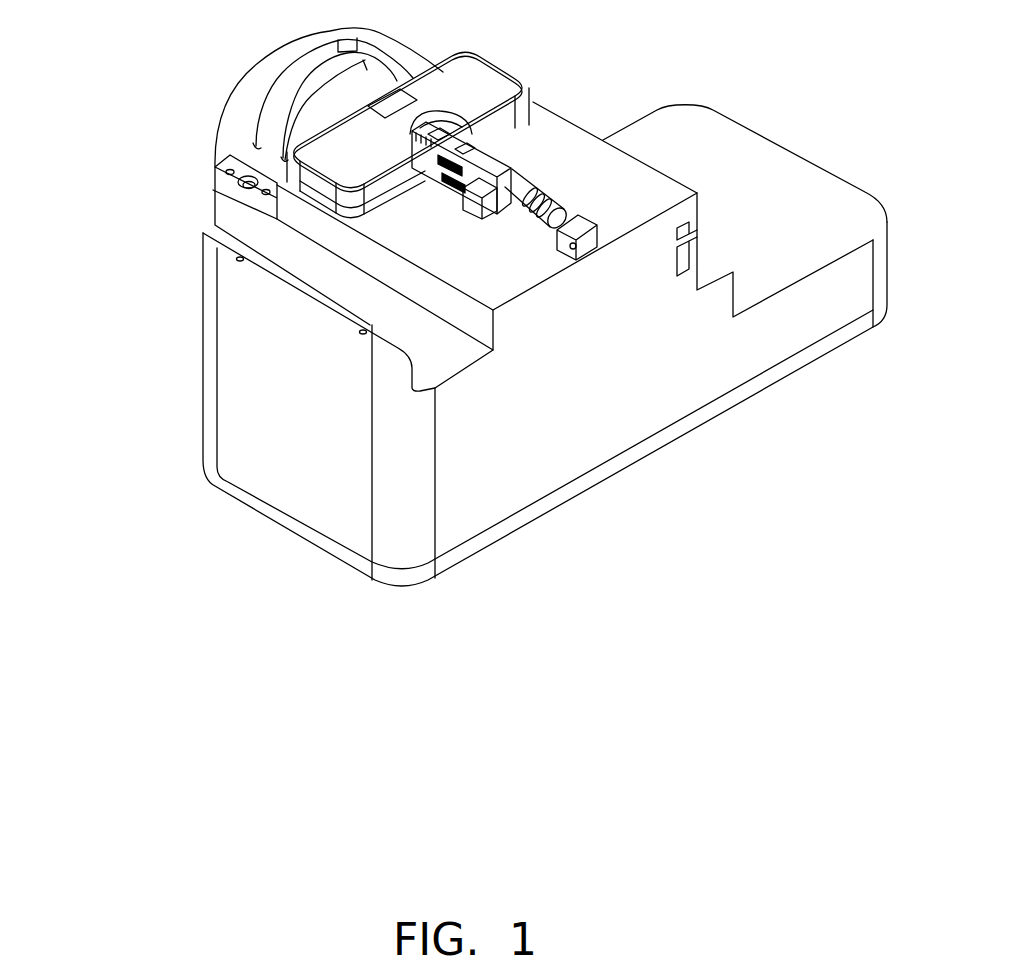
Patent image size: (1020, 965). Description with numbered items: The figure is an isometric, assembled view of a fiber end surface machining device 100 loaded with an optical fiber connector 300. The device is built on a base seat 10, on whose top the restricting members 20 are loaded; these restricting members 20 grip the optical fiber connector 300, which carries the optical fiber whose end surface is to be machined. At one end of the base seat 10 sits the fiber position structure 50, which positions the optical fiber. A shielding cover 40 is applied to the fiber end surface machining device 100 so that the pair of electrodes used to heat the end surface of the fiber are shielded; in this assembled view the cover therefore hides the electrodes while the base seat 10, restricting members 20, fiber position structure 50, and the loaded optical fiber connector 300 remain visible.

The fiber end surface machining device 100 is at (127, 43).
The base seat 10 is at (243, 348).
The restricting members 20 is at (483, 203).
The shielding cover 40 is at (320, 147).
The fiber position structure 50 is at (243, 97).
The optical fiber connector 300 is at (520, 148).